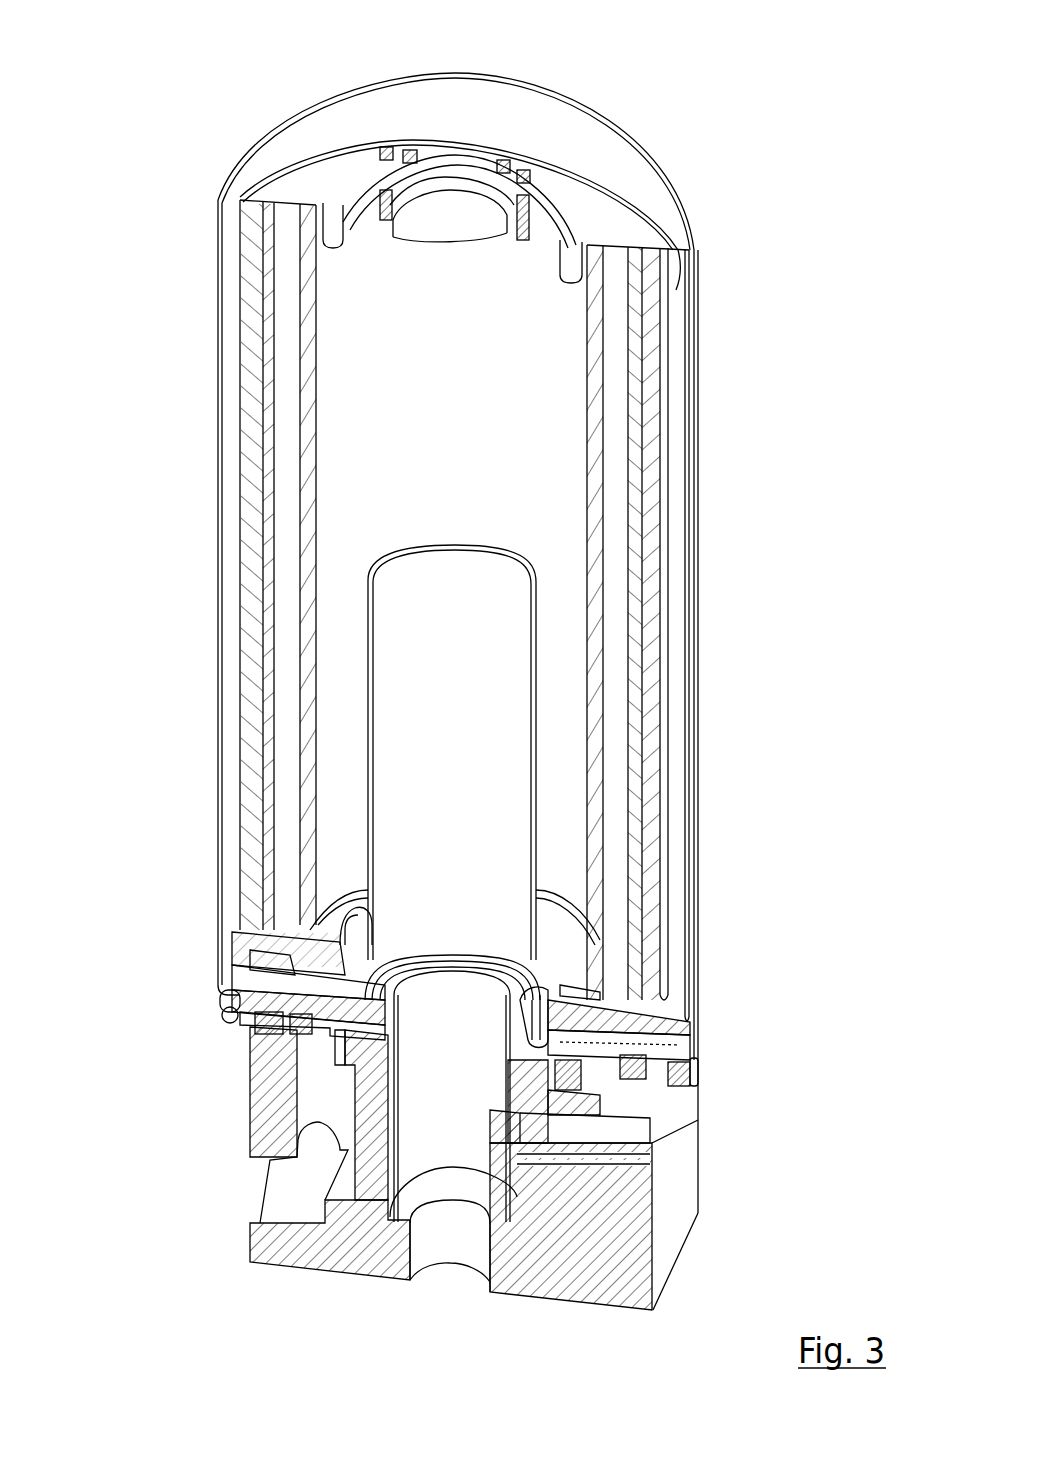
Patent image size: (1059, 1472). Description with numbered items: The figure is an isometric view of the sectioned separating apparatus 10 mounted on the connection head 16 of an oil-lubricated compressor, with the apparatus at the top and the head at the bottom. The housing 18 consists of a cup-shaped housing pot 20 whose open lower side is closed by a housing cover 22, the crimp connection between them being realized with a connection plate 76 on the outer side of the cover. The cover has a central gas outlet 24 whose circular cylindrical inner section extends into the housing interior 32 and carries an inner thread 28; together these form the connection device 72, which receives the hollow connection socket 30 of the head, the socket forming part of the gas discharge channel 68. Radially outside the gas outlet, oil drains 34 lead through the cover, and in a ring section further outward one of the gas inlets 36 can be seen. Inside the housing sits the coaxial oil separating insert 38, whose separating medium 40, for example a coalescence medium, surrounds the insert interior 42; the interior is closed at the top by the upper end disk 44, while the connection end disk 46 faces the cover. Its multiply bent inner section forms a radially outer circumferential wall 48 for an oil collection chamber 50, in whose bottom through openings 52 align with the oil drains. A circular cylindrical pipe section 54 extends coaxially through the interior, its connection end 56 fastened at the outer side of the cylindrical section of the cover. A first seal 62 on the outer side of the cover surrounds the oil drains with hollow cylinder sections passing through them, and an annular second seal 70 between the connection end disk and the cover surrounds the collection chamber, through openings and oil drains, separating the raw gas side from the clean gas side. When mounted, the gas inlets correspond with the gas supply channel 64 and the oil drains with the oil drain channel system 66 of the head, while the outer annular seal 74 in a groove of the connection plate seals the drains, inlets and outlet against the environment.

The separating apparatus 10 is at (417, 606).
The connection head 16 is at (606, 1282).
The housing 18 is at (241, 153).
The housing pot 20 is at (220, 245).
The housing cover 22 is at (232, 989).
The gas outlet 24 is at (441, 962).
The inner thread 28 is at (511, 980).
The connection socket 30 is at (453, 1148).
The housing interior 32 is at (343, 310).
The oil drains 34 is at (350, 1010).
The gas inlets 36 is at (592, 1003).
The oil separating insert 38 is at (661, 317).
The separating medium 40 is at (590, 350).
The insert interior 42 is at (432, 285).
The upper end disk 44 is at (648, 238).
The connection end disk 46 is at (673, 970).
The radially outer circumferential wall 48 is at (340, 940).
The oil collection chamber 50 is at (356, 938).
The through openings 52 is at (358, 990).
The pipe section 54 is at (535, 608).
The connection end 56 is at (532, 997).
The first seal 62 is at (565, 1078).
The gas supply channel 64 is at (303, 1125).
The oil drain channel system 66 is at (628, 1160).
The gas discharge channel 68 is at (447, 1247).
The second seal 70 is at (582, 1015).
The connection device 72 is at (702, 1072).
The outer annular seal 74 is at (262, 1020).
The connection plate 76 is at (683, 1075).